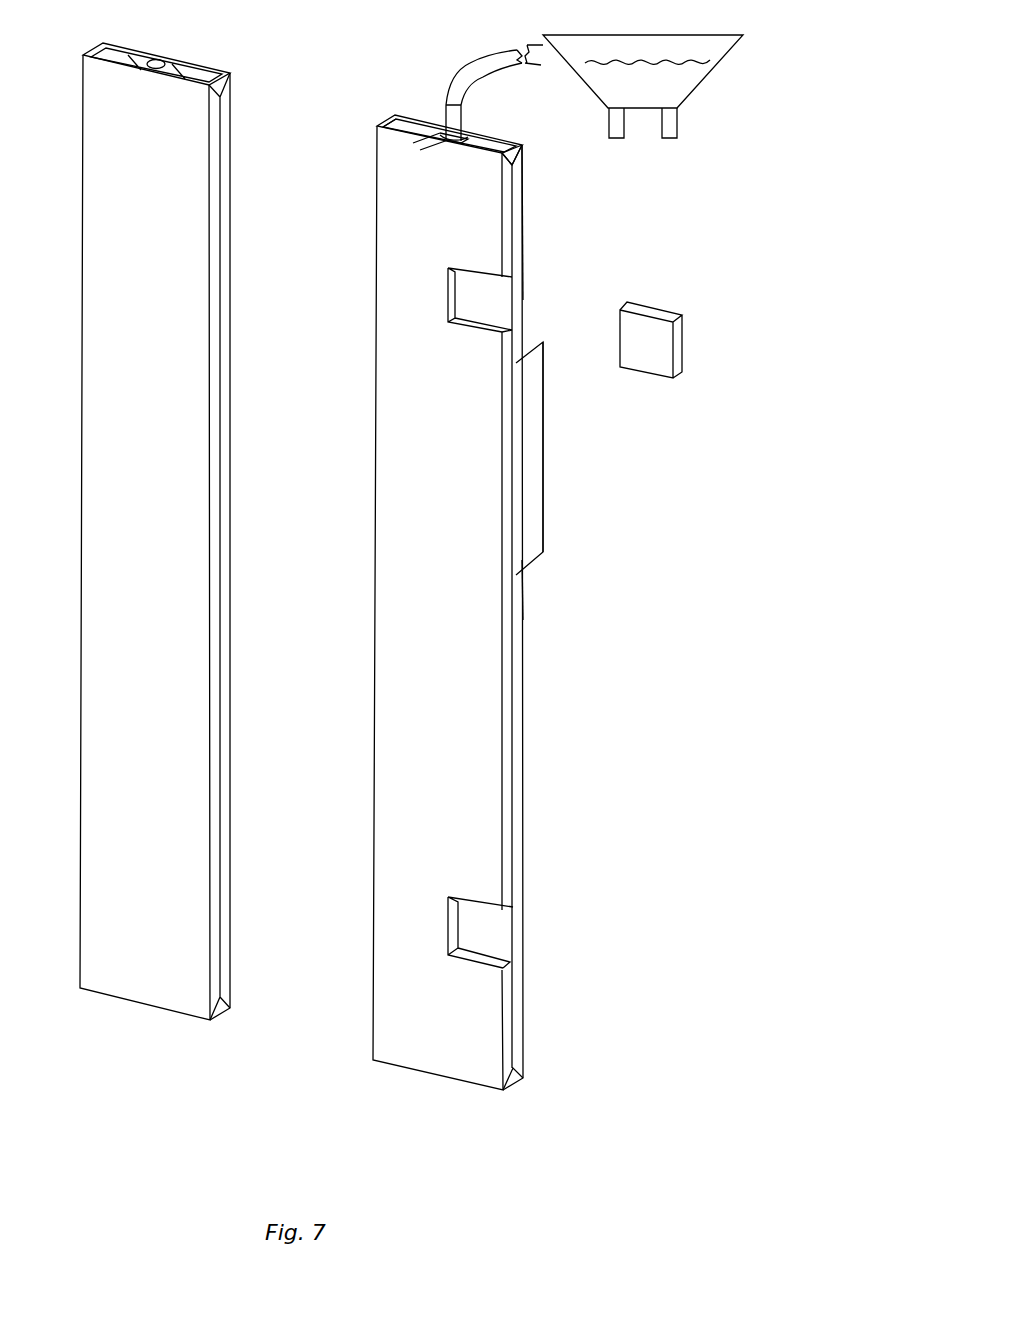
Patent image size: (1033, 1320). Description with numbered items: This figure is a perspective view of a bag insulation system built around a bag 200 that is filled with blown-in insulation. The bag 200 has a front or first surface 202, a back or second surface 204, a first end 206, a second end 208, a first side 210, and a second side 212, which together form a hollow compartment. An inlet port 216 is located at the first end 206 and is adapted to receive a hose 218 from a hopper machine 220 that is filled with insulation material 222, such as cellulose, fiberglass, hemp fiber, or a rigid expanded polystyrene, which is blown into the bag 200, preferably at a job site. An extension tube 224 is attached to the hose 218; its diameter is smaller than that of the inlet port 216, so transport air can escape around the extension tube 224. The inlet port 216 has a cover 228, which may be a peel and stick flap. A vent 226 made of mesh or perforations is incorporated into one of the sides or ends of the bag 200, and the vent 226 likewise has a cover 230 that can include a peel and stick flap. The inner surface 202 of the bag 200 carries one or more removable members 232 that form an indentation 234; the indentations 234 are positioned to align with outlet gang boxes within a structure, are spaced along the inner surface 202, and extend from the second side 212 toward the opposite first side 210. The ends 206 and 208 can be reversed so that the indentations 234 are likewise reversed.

The bag 200 is at (542, 208).
The first surface 202 is at (462, 505).
The second surface 204 is at (527, 162).
The first end 206 is at (403, 120).
The second end 208 is at (418, 1070).
The first side 210 is at (516, 588).
The second side 212 is at (373, 657).
The inlet port 216 is at (463, 127).
The hose 218 is at (470, 64).
The hopper machine 220 is at (723, 55).
The insulation material 222 is at (683, 82).
The extension tube 224 is at (463, 115).
The vent 226 is at (513, 413).
The cover 228 is at (435, 150).
The cover 230 is at (543, 437).
The removable member 232 is at (658, 312).
The indentation 234 is at (490, 300).